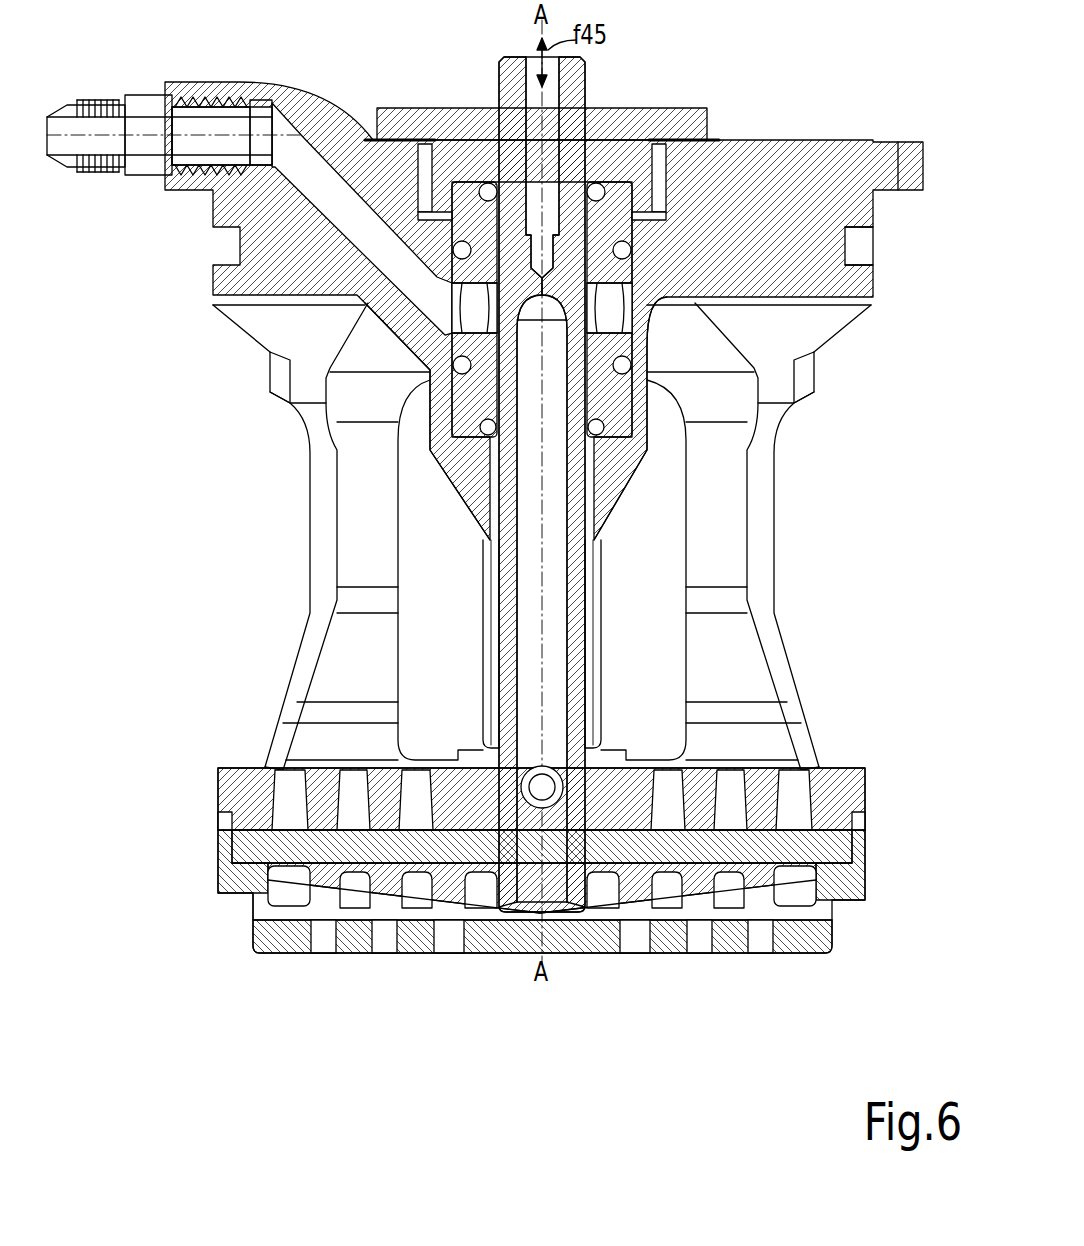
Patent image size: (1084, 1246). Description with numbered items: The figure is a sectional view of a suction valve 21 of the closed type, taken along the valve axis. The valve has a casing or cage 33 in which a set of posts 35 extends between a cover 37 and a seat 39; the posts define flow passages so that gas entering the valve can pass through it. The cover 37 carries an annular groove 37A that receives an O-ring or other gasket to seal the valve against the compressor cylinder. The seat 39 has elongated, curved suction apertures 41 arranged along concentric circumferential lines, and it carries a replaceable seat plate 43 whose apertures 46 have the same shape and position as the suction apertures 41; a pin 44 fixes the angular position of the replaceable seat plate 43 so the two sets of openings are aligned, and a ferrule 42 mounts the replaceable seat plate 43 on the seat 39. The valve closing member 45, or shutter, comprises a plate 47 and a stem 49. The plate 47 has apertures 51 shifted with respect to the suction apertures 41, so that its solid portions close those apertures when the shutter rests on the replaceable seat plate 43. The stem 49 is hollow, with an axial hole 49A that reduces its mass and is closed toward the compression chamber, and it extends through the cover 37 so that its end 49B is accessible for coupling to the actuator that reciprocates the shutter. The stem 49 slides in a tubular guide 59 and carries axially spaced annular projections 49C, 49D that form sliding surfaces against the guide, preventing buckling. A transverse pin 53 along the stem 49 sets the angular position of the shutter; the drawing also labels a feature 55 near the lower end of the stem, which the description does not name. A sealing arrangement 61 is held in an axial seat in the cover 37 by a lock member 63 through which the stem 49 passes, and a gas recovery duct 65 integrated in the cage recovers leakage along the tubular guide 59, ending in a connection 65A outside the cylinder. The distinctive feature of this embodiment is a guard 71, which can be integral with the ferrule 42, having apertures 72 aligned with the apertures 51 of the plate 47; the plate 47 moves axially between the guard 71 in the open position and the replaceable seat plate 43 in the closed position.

The suction valve 21 is at (160, 460).
The casing or cage 33 is at (533, 546).
The posts 35 is at (345, 510).
The cover 37 is at (250, 243).
The annular groove 37A is at (870, 255).
The seat 39 is at (516, 894).
The suction apertures or ports 41 is at (287, 790).
The ferrule 42 is at (860, 875).
The replaceable seat plate 43 is at (250, 848).
The pin 44 is at (850, 795).
The valve closing member 45 is at (480, 645).
The ports or apertures 46 is at (544, 898).
The plate 47 is at (292, 892).
The stem 49 is at (546, 483).
The axial hole 49A is at (545, 595).
The end of the stem 49B is at (585, 92).
The annular projection 49C is at (600, 488).
The annular projection 49D is at (603, 740).
The apertures or ports 51 is at (322, 880).
The transverse pin 53 is at (622, 766).
The pin 55 is at (580, 815).
The guide 59 is at (598, 650).
The sealing arrangement 61 is at (660, 255).
The lock member 63 is at (440, 125).
The gas recovery duct 65 is at (310, 160).
The connection 65A is at (178, 110).
The guard 71 is at (571, 970).
The ports or apertures 72 is at (325, 937).